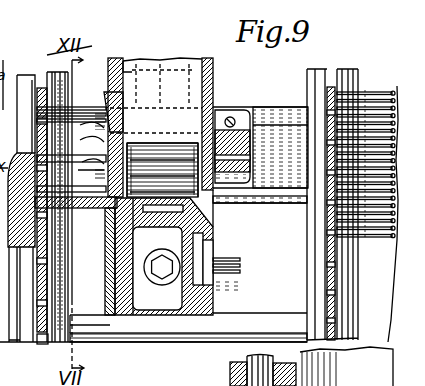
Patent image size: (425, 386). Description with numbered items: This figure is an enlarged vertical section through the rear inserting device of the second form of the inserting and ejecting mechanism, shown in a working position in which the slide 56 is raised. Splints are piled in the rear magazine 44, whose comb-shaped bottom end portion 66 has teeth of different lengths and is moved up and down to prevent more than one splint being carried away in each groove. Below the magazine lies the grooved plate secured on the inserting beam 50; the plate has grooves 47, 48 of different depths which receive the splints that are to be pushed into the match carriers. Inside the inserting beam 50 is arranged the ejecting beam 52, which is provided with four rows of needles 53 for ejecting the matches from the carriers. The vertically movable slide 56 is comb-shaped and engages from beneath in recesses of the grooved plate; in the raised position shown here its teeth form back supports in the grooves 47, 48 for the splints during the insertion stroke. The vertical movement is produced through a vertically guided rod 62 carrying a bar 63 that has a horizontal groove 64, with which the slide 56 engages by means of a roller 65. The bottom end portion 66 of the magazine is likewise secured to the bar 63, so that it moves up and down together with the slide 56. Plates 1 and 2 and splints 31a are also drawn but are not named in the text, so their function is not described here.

The frame plate 1 is at (42, 289).
The frame plate 2 is at (32, 342).
The contact fingers 31a is at (373, 98).
The rear magazine 44 is at (165, 62).
The groove 47 is at (67, 110).
The groove 48 is at (84, 215).
The inserting beam 50 is at (188, 280).
The ejecting beam 52 is at (241, 263).
The needles 53 is at (237, 276).
The slide 56 is at (103, 295).
The rod 62 is at (292, 385).
The bar 63 is at (240, 114).
The horizontal groove 64 is at (182, 134).
The roller 65 is at (162, 153).
The bottom end portion 66 is at (108, 104).